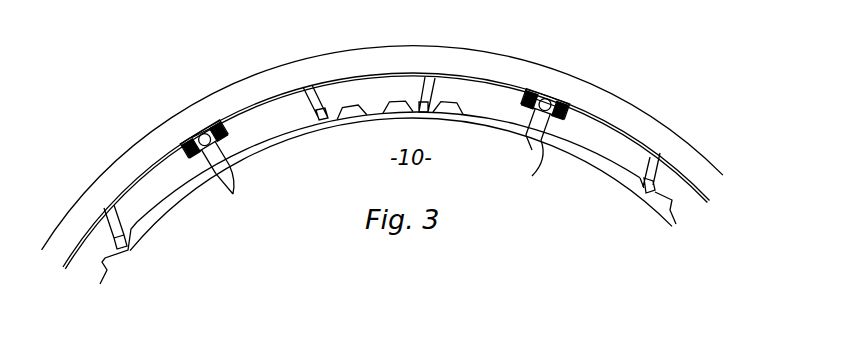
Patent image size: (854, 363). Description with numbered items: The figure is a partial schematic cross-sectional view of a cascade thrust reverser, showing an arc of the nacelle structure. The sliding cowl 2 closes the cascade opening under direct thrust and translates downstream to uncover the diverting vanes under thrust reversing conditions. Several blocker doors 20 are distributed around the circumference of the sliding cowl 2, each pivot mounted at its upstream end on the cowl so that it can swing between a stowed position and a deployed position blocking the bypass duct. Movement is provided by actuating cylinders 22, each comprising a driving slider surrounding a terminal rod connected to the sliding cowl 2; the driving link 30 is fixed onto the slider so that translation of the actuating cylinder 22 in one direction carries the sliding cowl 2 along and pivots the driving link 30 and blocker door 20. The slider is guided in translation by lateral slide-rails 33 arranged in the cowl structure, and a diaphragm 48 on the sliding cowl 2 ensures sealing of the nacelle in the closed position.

The sliding cowl 2 is at (683, 132).
The blocker door 20 is at (175, 198).
The actuating cylinder 22 is at (200, 133).
The driving link 30 is at (532, 176).
The lateral slide-rail 33 is at (206, 136).
The diaphragm 48 is at (500, 82).